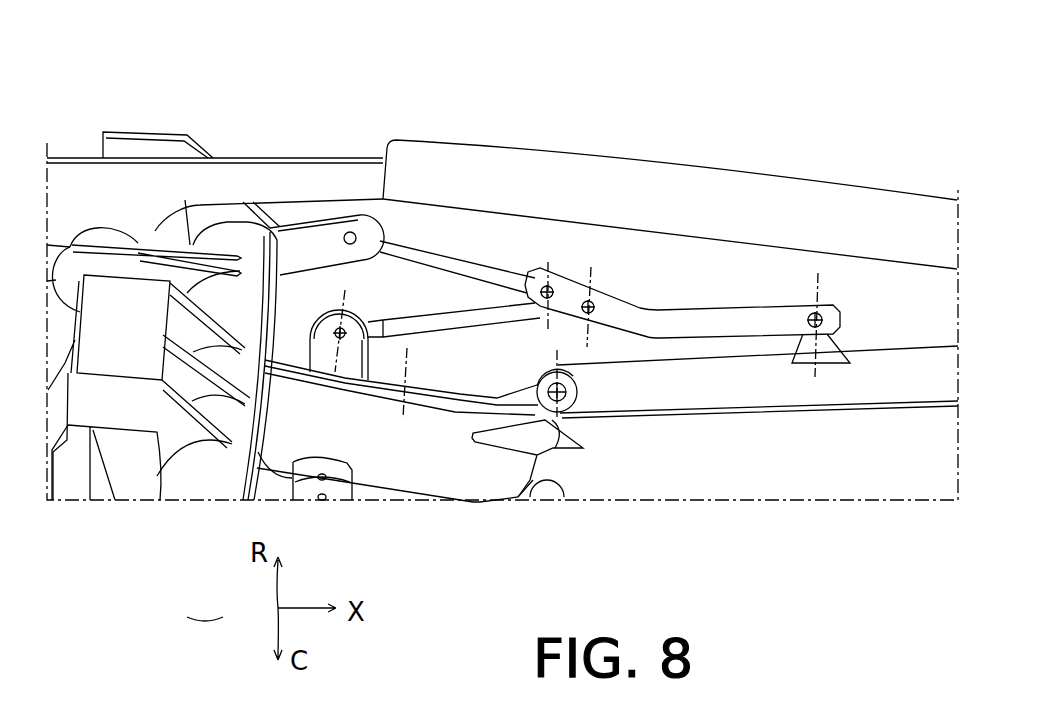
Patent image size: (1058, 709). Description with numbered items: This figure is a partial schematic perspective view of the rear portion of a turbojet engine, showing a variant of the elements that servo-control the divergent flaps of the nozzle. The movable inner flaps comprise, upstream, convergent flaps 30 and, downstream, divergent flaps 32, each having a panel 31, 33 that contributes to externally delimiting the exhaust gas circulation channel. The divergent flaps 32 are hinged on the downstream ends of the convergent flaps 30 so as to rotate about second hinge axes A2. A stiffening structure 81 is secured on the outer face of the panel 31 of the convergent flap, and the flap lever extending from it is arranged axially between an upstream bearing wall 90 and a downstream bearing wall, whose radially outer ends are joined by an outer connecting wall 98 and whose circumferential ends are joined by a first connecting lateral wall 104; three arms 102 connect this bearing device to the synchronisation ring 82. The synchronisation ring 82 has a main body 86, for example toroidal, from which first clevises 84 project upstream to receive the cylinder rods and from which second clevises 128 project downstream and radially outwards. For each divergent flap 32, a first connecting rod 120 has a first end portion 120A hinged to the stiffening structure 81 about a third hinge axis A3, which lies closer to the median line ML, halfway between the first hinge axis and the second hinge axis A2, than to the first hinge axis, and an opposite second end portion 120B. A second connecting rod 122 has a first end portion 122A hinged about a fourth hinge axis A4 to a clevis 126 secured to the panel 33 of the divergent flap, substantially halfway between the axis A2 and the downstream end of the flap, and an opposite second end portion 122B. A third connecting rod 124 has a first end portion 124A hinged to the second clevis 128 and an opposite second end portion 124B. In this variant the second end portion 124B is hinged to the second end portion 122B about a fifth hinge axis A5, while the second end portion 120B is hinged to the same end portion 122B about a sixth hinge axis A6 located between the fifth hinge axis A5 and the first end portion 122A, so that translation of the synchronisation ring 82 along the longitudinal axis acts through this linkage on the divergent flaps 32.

The convergent flaps 30 is at (490, 484).
The panel 31 is at (398, 460).
The divergent flaps 32 is at (740, 494).
The panel 33 is at (877, 473).
The stiffening structure 81 is at (423, 397).
The synchronisation ring 82 is at (205, 634).
The first clevises 84 is at (105, 258).
The main body 86 is at (210, 480).
The upstream bearing wall 90 is at (80, 272).
The outer connecting wall 98 is at (128, 300).
The arms 102 is at (173, 433).
The first connecting lateral wall 104 is at (87, 402).
The first connecting rod 120 is at (483, 313).
The first end portion 120A is at (370, 345).
The second end portion 120B is at (560, 317).
The second connecting rod 122 is at (713, 307).
The first end portion 122A is at (833, 328).
The second end portion 122B is at (535, 272).
The third connecting rod 124 is at (466, 255).
The first end portion 124A is at (383, 240).
The second end portion 124B is at (547, 288).
The clevis 126 is at (830, 345).
The second clevis 128 is at (307, 237).
The second hinge axis A2 is at (545, 378).
The third hinge axis A3 is at (350, 333).
The fourth hinge axis A4 is at (812, 345).
The fifth hinge axis A5 is at (552, 273).
The sixth hinge axis A6 is at (592, 302).
The median line ML is at (408, 362).